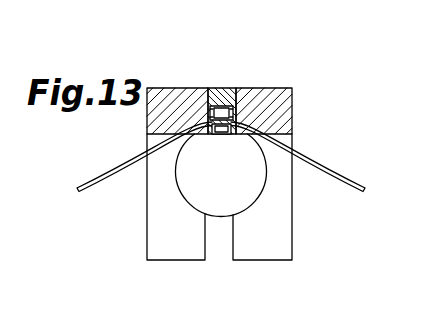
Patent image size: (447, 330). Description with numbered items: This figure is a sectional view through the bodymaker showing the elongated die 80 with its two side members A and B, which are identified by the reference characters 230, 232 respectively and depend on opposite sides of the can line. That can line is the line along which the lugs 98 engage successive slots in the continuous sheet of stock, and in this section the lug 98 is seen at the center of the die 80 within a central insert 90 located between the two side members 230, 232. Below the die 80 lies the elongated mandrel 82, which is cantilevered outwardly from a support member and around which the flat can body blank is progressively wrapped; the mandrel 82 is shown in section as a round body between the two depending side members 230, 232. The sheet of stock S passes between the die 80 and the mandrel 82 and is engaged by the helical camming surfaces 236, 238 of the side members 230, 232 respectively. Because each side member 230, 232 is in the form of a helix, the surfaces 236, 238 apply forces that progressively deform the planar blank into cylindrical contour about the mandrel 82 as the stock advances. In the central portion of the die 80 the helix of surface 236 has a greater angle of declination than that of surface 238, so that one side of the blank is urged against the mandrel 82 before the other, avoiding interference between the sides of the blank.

The elongated die 80 is at (236, 105).
The insert 90 is at (236, 112).
The lug 98 is at (213, 136).
The side member 230 is at (280, 128).
The side member 232 is at (152, 121).
The helical camming surface 236 is at (262, 147).
The helical camming surface 238 is at (192, 136).
The mandrel 82 is at (217, 218).
The spring S is at (201, 167).
The side member A is at (292, 242).
The side member B is at (146, 229).